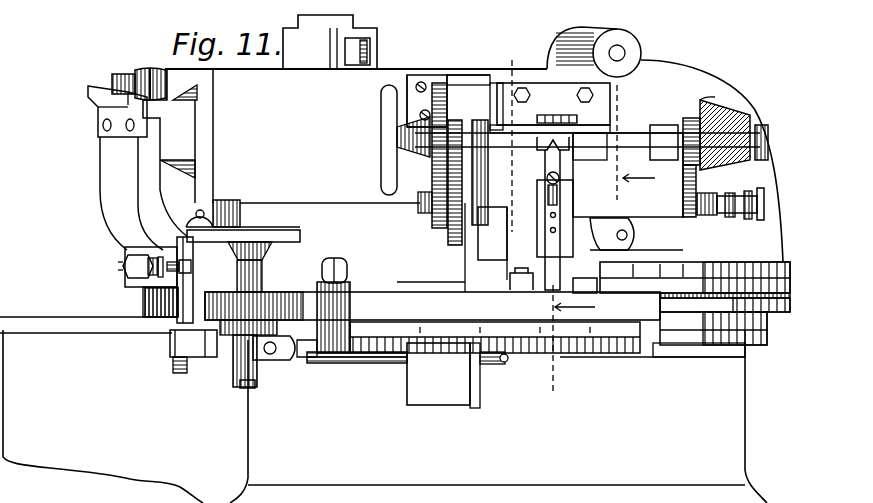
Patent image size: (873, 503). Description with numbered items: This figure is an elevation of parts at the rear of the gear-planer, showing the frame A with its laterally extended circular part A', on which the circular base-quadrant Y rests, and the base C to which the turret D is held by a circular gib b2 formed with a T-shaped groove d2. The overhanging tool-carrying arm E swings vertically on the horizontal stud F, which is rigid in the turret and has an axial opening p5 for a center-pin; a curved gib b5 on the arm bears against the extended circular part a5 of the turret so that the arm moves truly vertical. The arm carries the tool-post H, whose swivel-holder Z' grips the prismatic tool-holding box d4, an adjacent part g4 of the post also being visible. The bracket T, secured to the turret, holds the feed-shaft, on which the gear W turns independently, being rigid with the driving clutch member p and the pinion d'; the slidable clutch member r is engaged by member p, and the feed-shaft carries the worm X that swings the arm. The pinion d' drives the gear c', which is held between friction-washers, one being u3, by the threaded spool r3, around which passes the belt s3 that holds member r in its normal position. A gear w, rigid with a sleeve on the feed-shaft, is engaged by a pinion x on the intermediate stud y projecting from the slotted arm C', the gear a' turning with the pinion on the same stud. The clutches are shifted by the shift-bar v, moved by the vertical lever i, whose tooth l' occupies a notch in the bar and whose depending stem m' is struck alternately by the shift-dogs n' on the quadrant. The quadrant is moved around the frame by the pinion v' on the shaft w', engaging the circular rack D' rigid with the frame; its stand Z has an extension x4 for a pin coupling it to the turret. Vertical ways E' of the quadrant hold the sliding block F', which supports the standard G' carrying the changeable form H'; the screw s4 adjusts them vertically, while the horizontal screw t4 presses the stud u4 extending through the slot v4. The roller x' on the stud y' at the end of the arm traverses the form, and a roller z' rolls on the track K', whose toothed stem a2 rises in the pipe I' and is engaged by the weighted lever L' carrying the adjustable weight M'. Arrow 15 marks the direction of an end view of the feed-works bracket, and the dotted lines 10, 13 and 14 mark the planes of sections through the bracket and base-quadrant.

The frame A is at (383, 410).
The overhanging tool-carrying arm E is at (345, 180).
The changeable form H' is at (102, 110).
The roller x' is at (116, 64).
The stud y' is at (150, 64).
The standard G' is at (126, 227).
The stud u4 is at (123, 266).
The horizontal slot v4 is at (153, 258).
The horizontal screw t4 is at (188, 270).
The roller z' is at (243, 195).
The horizontal track K' is at (266, 254).
The base quadrant Y is at (432, 306).
The pinion shaft w' is at (348, 304).
The flanged sleeve I' is at (233, 361).
The toothed stem a2 is at (247, 390).
The vertical ways E' is at (177, 378).
The vertically-sliding block F' is at (145, 333).
The adjusting screw s4 is at (173, 364).
The weighted lever L' is at (380, 367).
The pinion v' is at (357, 373).
The adjustable weight M' is at (443, 393).
The circular-toothed rack D' is at (547, 367).
The section line 13 is at (559, 238).
The circular gib b2 is at (664, 298).
The stand Z is at (583, 276).
The base C is at (725, 347).
The circular part of frame A' is at (702, 354).
The T-shaped groove d2 is at (727, 348).
The view arrow 15 is at (360, 170).
The tool-post H is at (330, 42).
The tool-holding box d4 is at (370, 52).
The plate g4 is at (335, 47).
The swivel-holder Z' is at (326, 85).
The section line 14 is at (510, 133).
The section line 10 is at (635, 136).
The curved gib b5 is at (420, 98).
The gear w is at (433, 125).
The extended circular part a5 is at (456, 80).
The pinion x is at (444, 184).
The intermediate stud y is at (409, 211).
The gear a' is at (460, 199).
The worm X is at (550, 108).
The bracket T is at (628, 175).
The tooth l' is at (513, 149).
The slotted arm C' is at (492, 233).
The stem m' is at (540, 224).
The vertical lever i is at (512, 186).
The shift-dog n' is at (507, 289).
The horizontal stud F is at (600, 42).
The axial opening p5 is at (624, 58).
The turret D is at (712, 136).
The shift-bar v is at (659, 116).
The pinion d' is at (691, 106).
The gear W is at (705, 100).
The driving clutch member p is at (725, 110).
The slidable clutch member r is at (748, 160).
The friction-washer u3 is at (695, 198).
The spool r3 is at (732, 215).
The belt s3 is at (752, 215).
The extension x4 is at (632, 235).
The gear c' is at (636, 260).